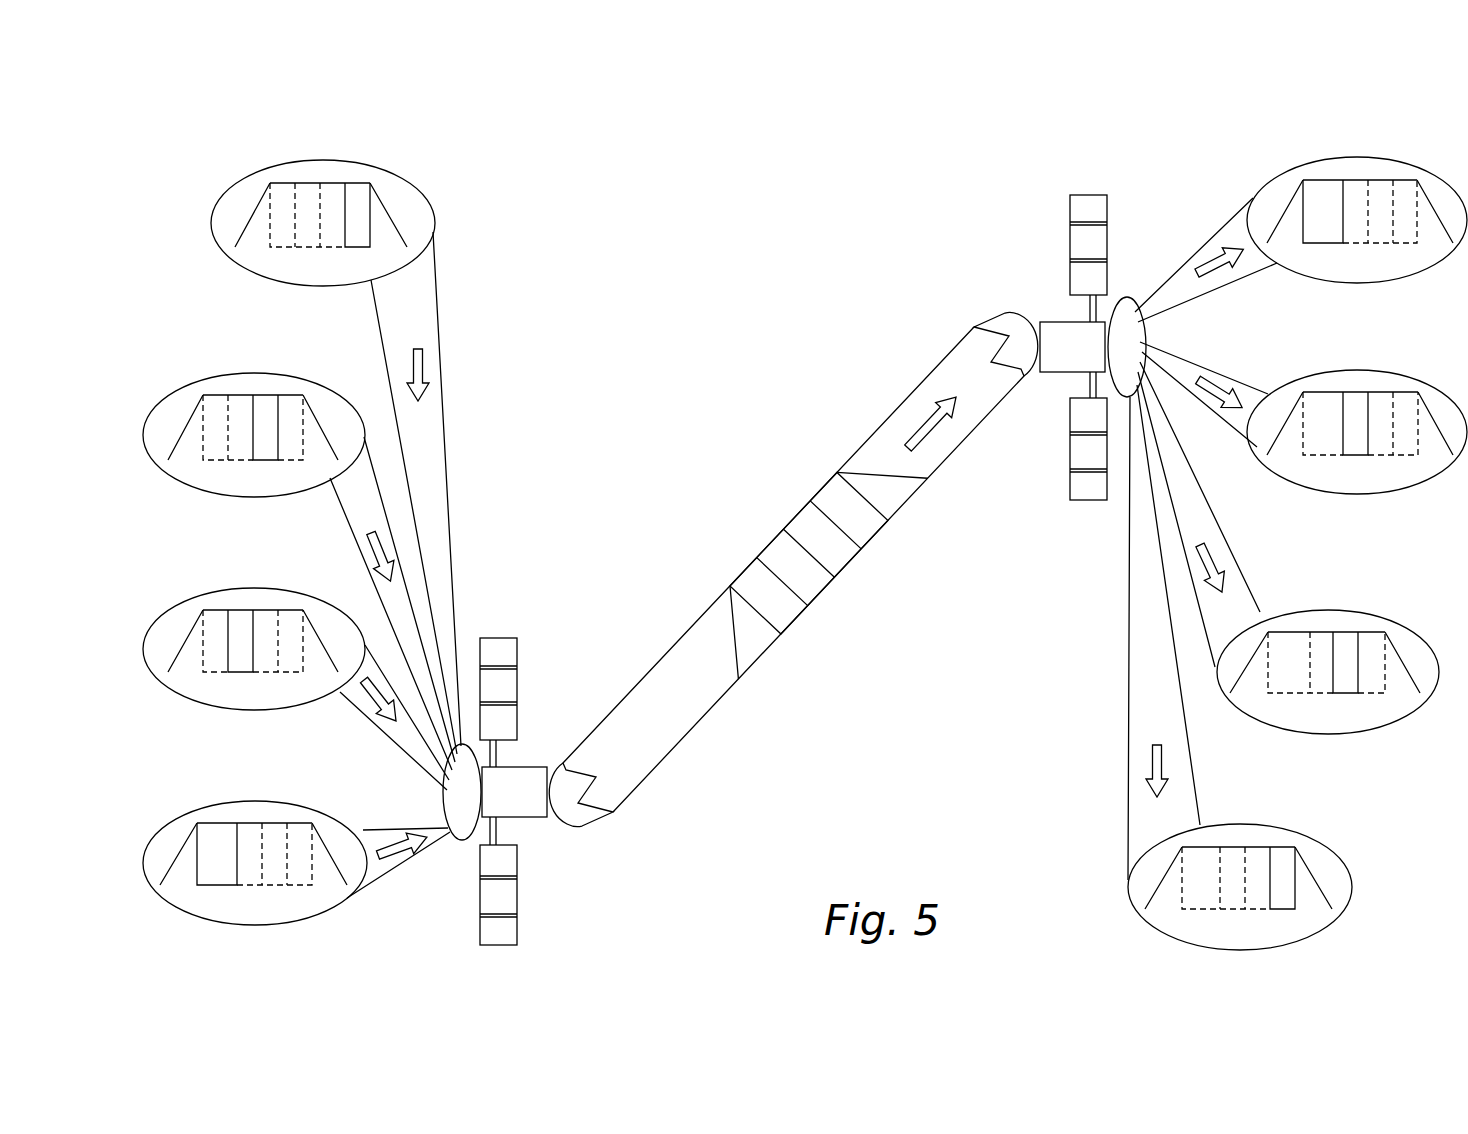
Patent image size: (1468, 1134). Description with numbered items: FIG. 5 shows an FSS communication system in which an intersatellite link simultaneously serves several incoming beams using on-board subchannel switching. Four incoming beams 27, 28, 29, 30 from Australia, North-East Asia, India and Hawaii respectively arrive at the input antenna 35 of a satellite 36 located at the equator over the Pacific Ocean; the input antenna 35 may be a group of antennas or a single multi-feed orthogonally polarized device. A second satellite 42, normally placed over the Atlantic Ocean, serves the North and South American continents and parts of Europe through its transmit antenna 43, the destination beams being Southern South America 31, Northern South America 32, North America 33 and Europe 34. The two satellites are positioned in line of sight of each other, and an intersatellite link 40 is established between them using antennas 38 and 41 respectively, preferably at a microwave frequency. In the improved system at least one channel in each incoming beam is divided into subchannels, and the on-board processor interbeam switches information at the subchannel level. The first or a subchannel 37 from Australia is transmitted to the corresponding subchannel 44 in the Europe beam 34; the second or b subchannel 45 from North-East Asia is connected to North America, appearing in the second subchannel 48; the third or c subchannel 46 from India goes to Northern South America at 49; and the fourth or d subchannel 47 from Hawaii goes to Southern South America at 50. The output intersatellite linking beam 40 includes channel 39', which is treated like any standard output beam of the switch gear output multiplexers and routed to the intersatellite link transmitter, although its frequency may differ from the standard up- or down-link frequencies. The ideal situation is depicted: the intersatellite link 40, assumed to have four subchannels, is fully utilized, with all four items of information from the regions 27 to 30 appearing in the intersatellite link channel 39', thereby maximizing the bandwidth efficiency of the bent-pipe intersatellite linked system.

The incoming beam from Australia 27 is at (255, 865).
The incoming beam from North-East Asia 28 is at (254, 653).
The incoming beam from India 29 is at (254, 445).
The incoming beam from Hawaii 30 is at (323, 232).
The Southern South America beam 31 is at (1265, 867).
The Northern South America beam 32 is at (1328, 659).
The North America beam 33 is at (1357, 437).
The Europe beam 34 is at (1357, 222).
The input antenna 35 is at (458, 840).
The satellite 36 is at (527, 817).
The first (a) subchannel information 37 is at (215, 885).
The intersatellite link antenna 38 is at (595, 815).
The intersatellite link channel 39' is at (807, 554).
The intersatellite link 40 is at (663, 655).
The intersatellite link antenna 41 is at (1010, 320).
The second satellite 42 is at (1055, 322).
The second satellite transmit antenna 43 is at (1132, 300).
The subchannel in Europe beam 44 is at (1322, 180).
The second (b) subchannel 45 is at (240, 672).
The third (c) subchannel 46 is at (265, 460).
The fourth (d) subchannel 47 is at (355, 248).
The second subchannel in North America beam 48 is at (1355, 455).
The third subchannel in Northern South America beam 49 is at (1345, 693).
The fourth subchannel in Southern South America beam 50 is at (1283, 909).